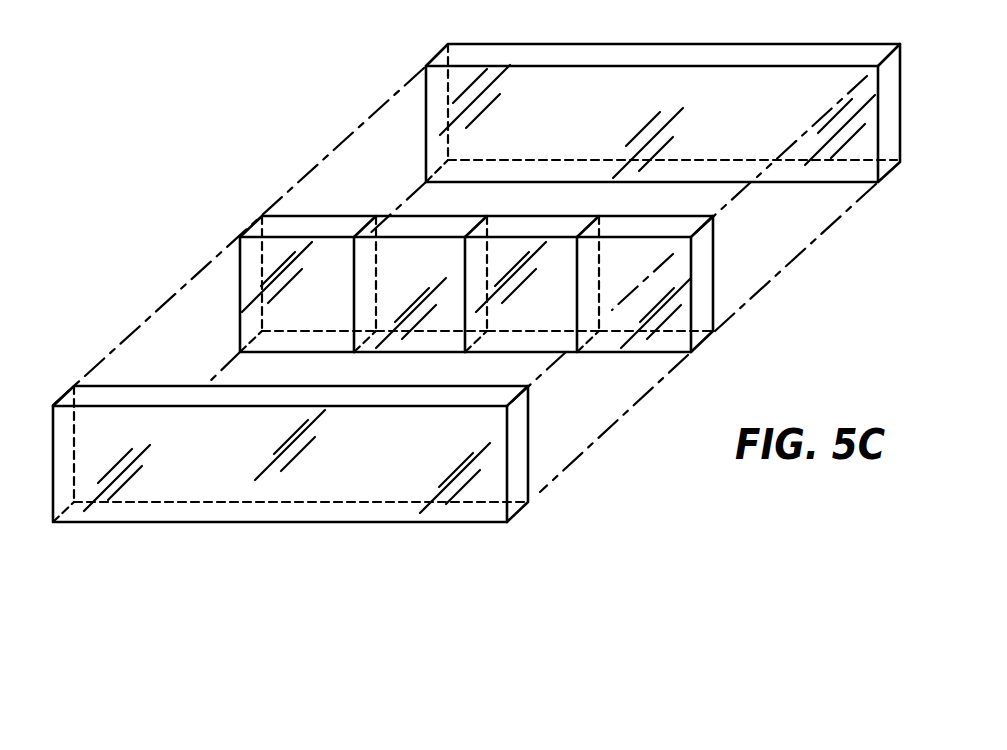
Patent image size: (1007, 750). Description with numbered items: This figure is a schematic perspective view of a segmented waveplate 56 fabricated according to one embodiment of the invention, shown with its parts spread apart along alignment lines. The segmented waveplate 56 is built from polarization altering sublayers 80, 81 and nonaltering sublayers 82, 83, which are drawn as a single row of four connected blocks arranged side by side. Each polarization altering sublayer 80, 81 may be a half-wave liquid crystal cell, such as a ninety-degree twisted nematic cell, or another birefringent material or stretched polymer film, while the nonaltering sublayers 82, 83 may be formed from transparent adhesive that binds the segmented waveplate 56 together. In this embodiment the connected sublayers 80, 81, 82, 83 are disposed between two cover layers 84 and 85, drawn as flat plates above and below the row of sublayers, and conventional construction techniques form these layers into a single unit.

The segmented waveplate 56 is at (327, 82).
The polarization altering sublayer 80 is at (305, 231).
The polarization altering sublayer 81 is at (530, 230).
The nonaltering sublayer 82 is at (411, 229).
The nonaltering sublayer 83 is at (636, 230).
The cover layer 84 is at (355, 527).
The cover layer 85 is at (645, 46).